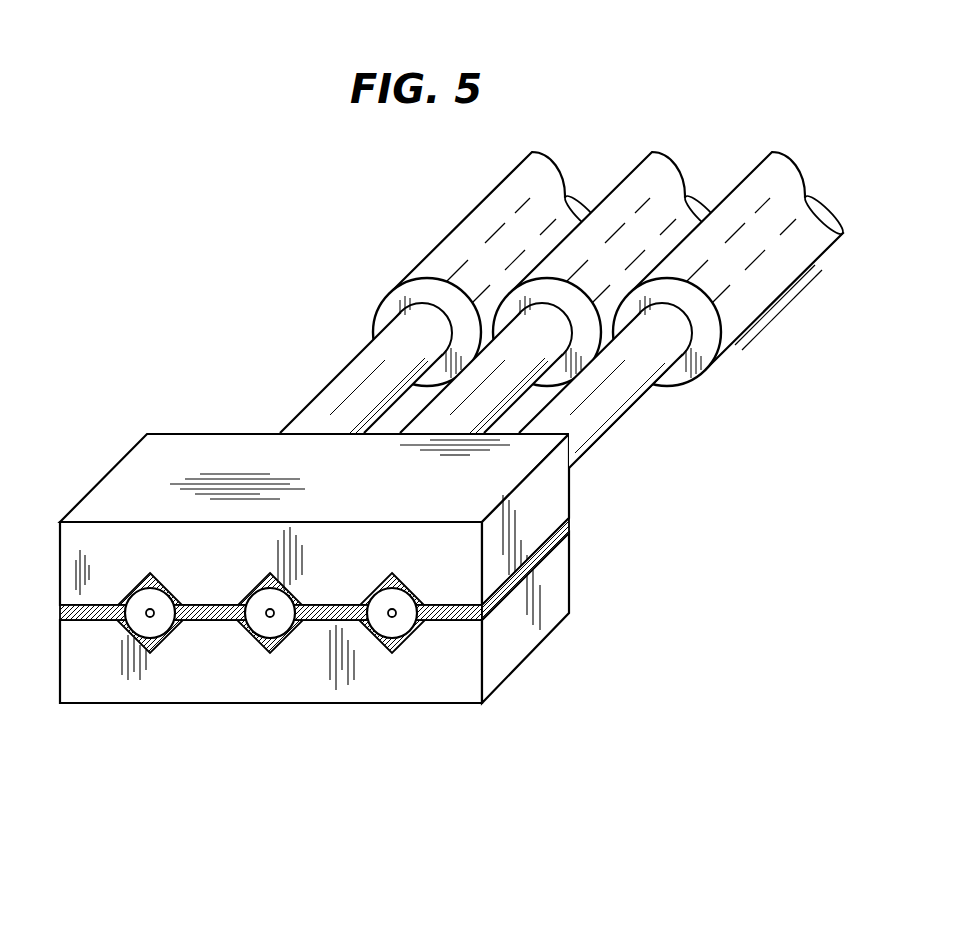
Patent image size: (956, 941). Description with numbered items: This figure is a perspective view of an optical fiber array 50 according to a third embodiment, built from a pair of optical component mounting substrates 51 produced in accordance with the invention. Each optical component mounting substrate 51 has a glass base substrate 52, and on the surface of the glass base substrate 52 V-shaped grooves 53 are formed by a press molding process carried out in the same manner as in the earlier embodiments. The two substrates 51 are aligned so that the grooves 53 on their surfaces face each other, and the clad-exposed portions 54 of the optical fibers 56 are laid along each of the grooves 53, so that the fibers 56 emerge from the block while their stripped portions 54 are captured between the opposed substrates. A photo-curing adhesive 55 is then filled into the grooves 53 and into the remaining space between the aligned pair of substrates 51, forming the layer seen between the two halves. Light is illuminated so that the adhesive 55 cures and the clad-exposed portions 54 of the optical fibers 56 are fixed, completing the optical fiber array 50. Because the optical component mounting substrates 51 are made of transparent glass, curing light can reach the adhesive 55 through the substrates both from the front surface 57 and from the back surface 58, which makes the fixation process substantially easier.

The optical fiber array 50 is at (703, 619).
The optical component mounting substrate 51 is at (339, 588).
The glass base substrate 52 is at (124, 478).
The V-shaped groove 53 is at (135, 592).
The clad-exposed portion 54 is at (450, 417).
The photo-curing adhesive 55 is at (568, 528).
The optical fiber 56 is at (578, 184).
The front surface 57 is at (240, 457).
The back surface 58 is at (88, 708).